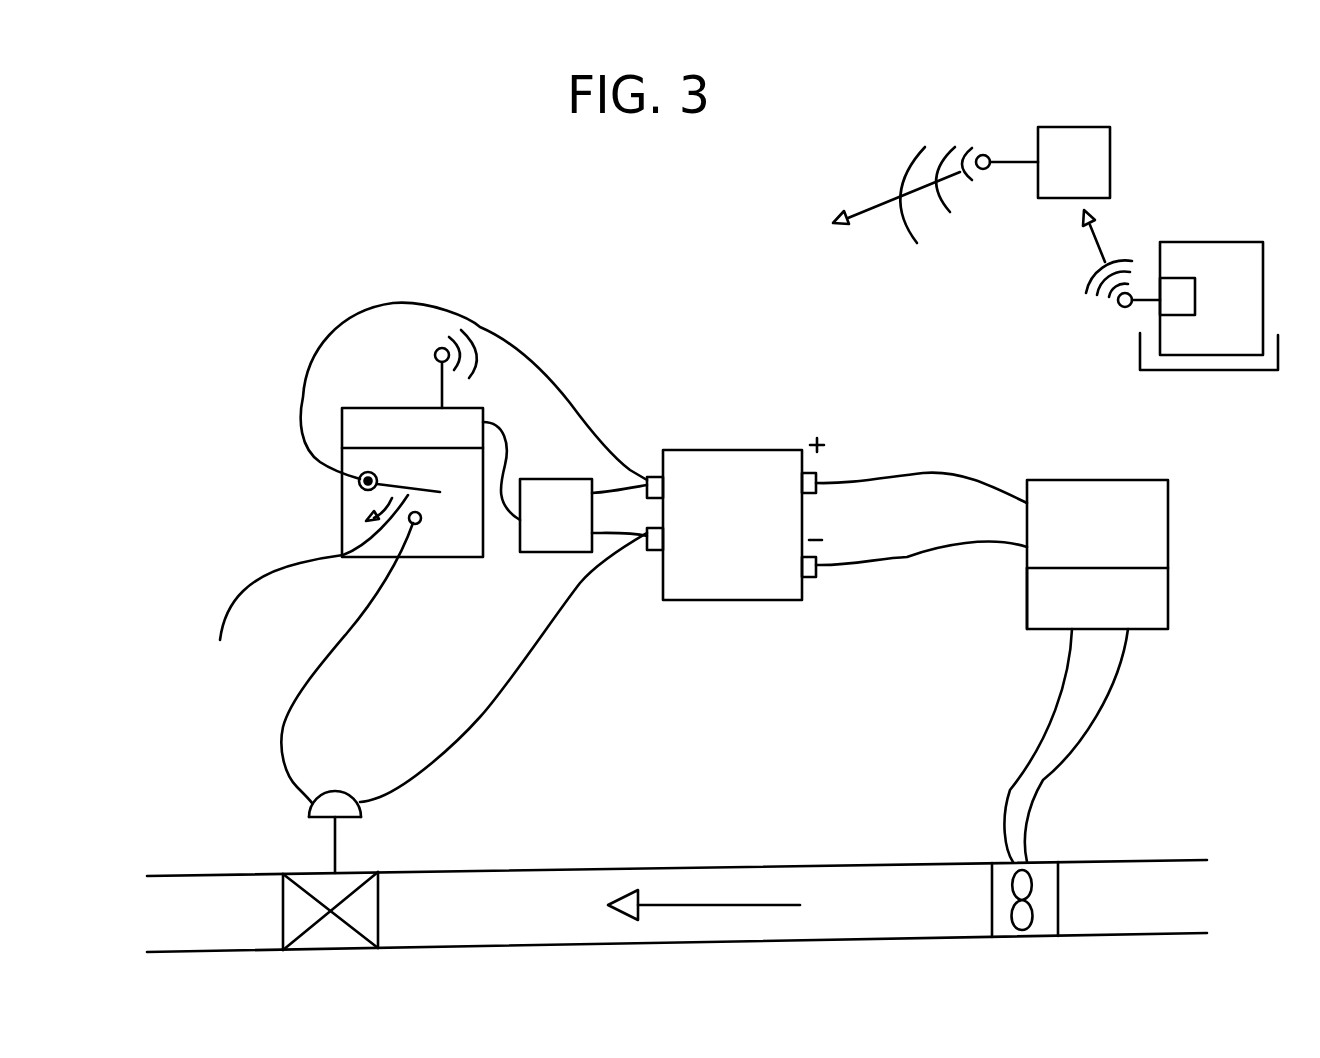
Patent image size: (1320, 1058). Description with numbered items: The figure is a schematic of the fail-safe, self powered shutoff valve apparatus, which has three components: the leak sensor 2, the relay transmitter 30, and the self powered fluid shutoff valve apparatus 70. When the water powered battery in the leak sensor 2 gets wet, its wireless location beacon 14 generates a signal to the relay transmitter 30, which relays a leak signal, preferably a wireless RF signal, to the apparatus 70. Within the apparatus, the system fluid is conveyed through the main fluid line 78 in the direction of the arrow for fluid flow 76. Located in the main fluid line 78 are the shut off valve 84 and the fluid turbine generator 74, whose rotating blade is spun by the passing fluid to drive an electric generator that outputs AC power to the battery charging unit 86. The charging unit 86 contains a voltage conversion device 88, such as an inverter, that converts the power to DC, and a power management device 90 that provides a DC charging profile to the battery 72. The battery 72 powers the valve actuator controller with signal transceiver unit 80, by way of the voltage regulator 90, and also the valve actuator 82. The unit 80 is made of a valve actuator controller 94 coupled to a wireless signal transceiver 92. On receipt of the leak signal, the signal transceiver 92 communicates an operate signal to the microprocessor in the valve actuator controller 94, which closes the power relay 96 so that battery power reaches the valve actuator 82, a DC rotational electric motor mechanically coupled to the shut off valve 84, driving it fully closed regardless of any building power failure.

The leak sensor 2 is at (1207, 242).
The wireless location beacon 14 is at (1170, 293).
The relay transmitter 30 is at (1075, 127).
The self powered fluid shutoff valve apparatus 70 is at (298, 272).
The battery 72 is at (712, 457).
The fluid turbine generator 74 is at (1050, 862).
The fluid flow 76 is at (697, 903).
The main fluid line 78 is at (870, 863).
The valve actuator controller with signal transceiver unit 80 is at (318, 523).
The valve actuator 82 is at (340, 785).
The shut off valve 84 is at (370, 900).
The battery charging unit 86 is at (1197, 515).
The voltage conversion device 88 is at (1162, 600).
The power management device 90 is at (555, 488).
The wireless signal transceiver 92 is at (390, 415).
The valve actuator controller 94 is at (455, 543).
The power relay 96 is at (301, 589).